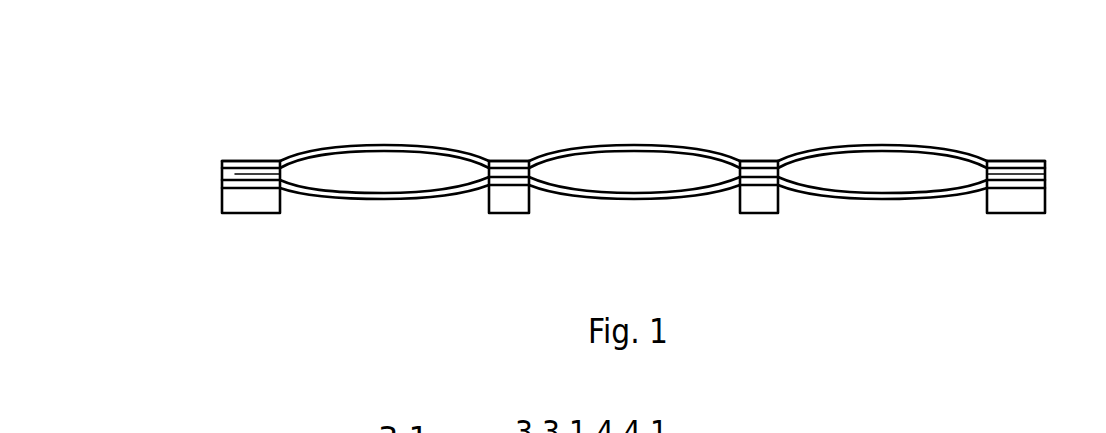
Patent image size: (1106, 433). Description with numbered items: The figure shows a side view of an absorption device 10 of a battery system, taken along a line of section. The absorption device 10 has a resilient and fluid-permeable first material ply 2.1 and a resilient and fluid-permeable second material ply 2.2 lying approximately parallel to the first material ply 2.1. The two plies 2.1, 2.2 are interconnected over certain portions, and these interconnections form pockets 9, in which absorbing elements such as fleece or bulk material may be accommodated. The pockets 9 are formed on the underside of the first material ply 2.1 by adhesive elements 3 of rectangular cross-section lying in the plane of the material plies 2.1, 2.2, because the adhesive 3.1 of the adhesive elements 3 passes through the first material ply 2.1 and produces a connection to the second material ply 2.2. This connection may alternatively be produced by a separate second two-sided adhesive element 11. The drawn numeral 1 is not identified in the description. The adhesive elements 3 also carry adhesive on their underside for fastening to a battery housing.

The absorption device 10 is at (167, 93).
The hollow structure element 1 is at (385, 175).
The first material ply 2.1 is at (323, 197).
The second material ply 2.2 is at (307, 153).
The pockets 9 is at (335, 175).
The adhesive elements 3 is at (247, 198).
The adhesive 3.1 is at (510, 173).
The second two-sided adhesive element 11 is at (235, 174).